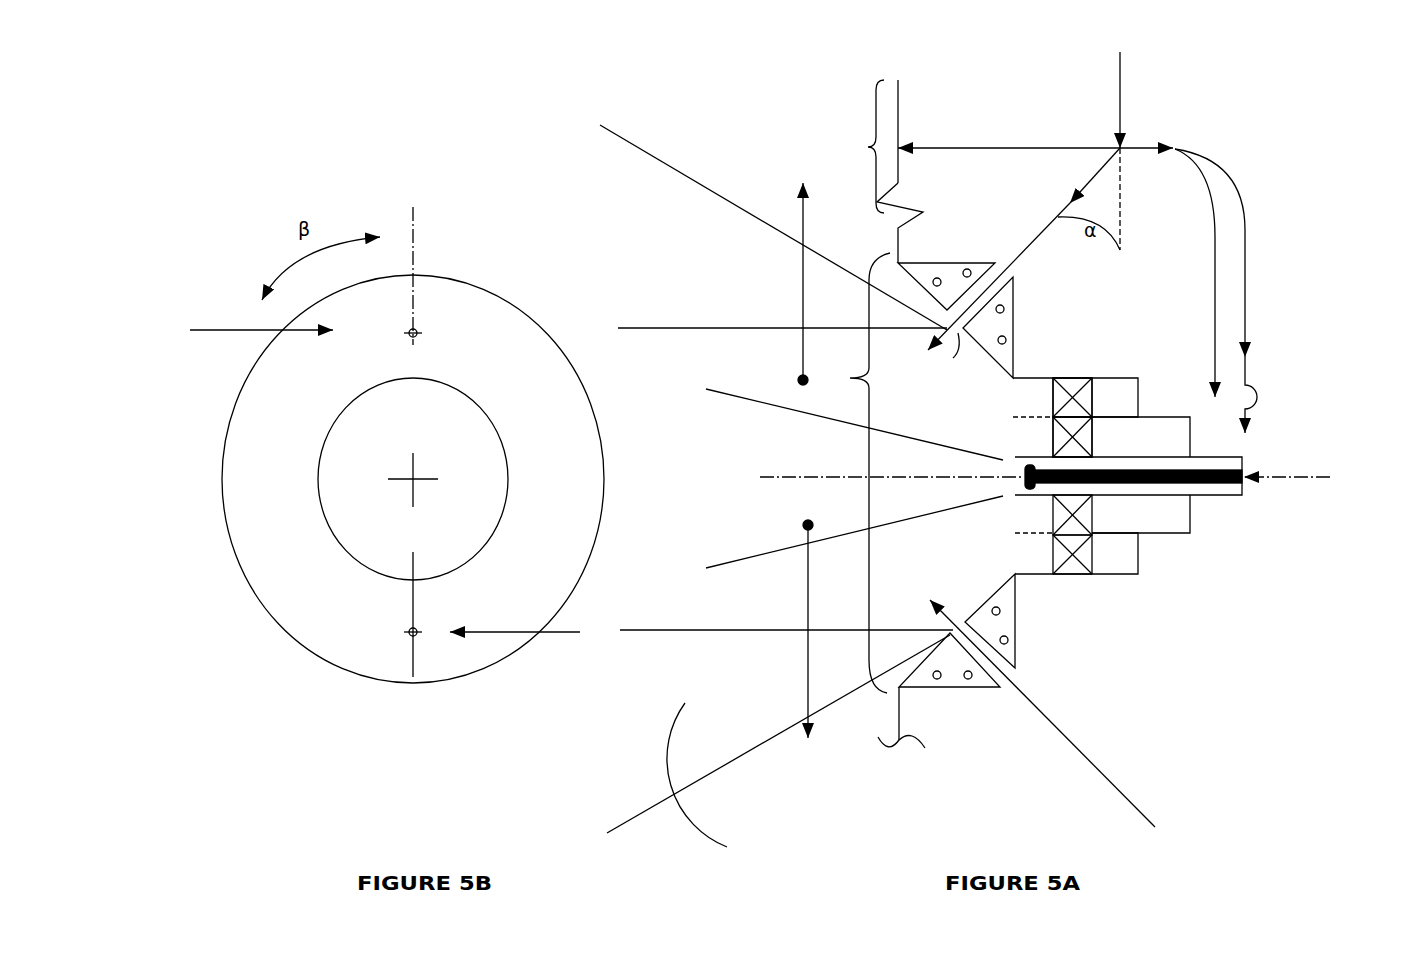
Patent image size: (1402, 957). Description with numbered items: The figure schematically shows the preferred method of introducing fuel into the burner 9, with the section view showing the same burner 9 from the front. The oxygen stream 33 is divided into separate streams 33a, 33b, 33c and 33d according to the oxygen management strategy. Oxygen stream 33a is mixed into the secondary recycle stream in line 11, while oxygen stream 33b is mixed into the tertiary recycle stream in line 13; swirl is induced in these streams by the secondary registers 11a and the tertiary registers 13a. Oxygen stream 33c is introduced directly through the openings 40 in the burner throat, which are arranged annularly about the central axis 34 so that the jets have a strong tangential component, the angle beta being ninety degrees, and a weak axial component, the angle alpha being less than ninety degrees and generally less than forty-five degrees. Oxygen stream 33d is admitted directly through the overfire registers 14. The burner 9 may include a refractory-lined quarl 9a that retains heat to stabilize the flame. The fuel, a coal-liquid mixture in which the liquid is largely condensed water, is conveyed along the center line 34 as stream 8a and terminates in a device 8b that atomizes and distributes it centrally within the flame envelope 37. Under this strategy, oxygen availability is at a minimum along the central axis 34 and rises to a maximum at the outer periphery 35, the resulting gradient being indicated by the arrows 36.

In FIG. 5A, the coal-liquid stream 8a is at (1275, 474).
In FIG. 5A, the atomizing device 8b is at (1043, 487).
In FIG. 5A, the burner 9 is at (920, 473).
In FIG. 5A, the quarl 9a is at (990, 598).
In FIG. 5A, the secondary recycle line 11 is at (1190, 433).
In FIG. 5A, the secondary registers 11a is at (1052, 434).
In FIG. 5A, the tertiary recycle line 13 is at (1142, 397).
In FIG. 5A, the tertiary registers 13a is at (1052, 398).
In FIG. 5A, the overfire registers 14 is at (877, 171).
In FIG. 5A, the oxygen stream 33 is at (1119, 86).
In FIG. 5A, the oxygen stream 33a is at (1234, 291).
In FIG. 5A, the oxygen stream 33b is at (1191, 273).
In FIG. 5B, the oxygen stream 33c is at (385, 500).
In FIG. 5A, the oxygen stream 33c is at (1024, 249).
In FIG. 5A, the oxygen stream 33d is at (1035, 133).
In FIG. 5B, the central axis 34 is at (416, 480).
In FIG. 5A, the central axis 34 is at (1054, 462).
In FIG. 5A, the outer periphery 35 is at (759, 487).
In FIG. 5A, the arrows 36 is at (801, 465).
In FIG. 5A, the flame envelope 37 is at (713, 787).
In FIG. 5A, the openings 40 is at (960, 345).